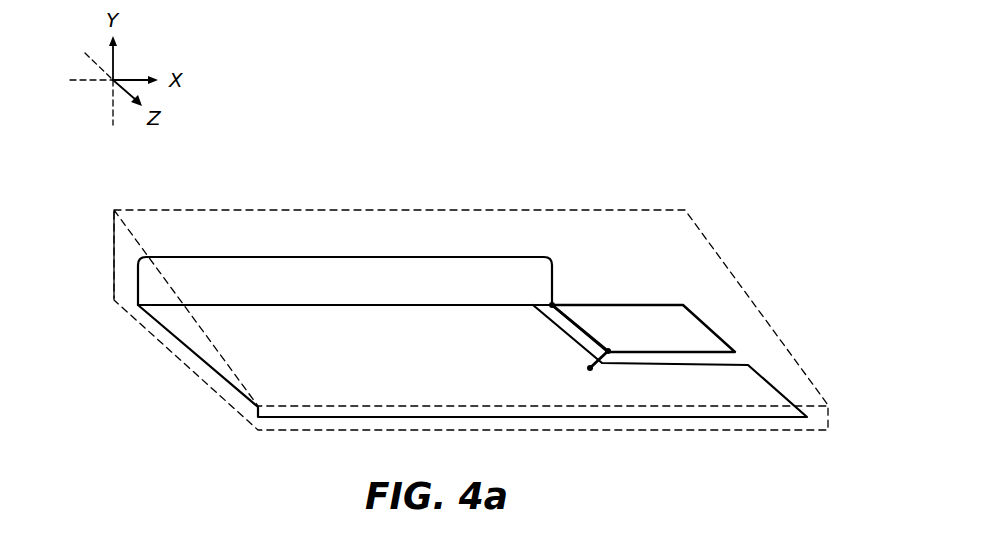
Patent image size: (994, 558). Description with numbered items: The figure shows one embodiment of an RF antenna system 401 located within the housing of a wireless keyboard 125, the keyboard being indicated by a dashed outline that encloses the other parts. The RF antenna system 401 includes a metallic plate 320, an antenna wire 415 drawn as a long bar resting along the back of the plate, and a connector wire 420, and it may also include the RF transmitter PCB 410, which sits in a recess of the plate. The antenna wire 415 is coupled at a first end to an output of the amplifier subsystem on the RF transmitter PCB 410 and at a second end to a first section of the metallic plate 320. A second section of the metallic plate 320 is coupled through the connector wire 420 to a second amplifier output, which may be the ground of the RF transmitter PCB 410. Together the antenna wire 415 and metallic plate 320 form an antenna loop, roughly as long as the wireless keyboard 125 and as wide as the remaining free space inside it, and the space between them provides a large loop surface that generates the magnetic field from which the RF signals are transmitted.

The wireless keyboard 125 is at (163, 210).
The RF antenna system 401 is at (128, 283).
The antenna wire 415 is at (502, 257).
The RF transmitter PCB 410 is at (693, 328).
The metallic plate 320 is at (757, 388).
The connector wire 420 is at (596, 362).